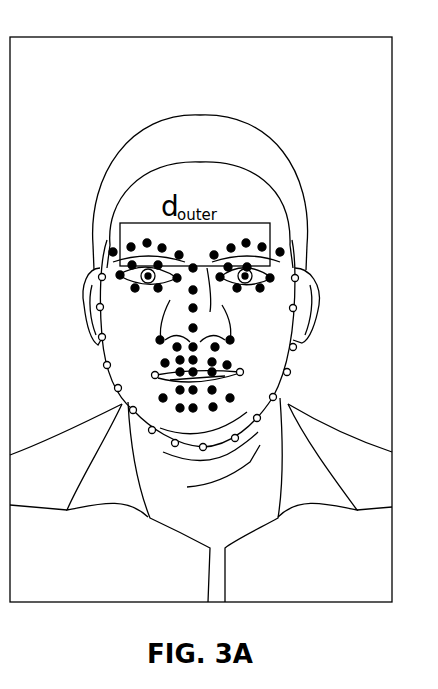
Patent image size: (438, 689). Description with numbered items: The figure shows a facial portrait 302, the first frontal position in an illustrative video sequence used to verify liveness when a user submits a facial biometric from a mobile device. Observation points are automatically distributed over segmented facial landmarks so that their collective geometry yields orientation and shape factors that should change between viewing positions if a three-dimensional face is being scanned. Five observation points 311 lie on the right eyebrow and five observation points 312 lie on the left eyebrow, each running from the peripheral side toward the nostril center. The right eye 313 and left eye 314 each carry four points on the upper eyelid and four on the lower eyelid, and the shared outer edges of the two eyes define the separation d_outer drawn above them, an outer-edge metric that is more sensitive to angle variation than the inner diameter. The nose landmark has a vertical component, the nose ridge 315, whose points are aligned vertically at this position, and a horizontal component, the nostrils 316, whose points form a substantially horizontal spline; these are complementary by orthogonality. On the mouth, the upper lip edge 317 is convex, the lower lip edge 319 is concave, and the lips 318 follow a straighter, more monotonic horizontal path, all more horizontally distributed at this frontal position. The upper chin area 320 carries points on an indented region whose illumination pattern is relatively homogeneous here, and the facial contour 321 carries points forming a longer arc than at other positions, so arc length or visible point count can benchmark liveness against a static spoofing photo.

The facial portrait 302 is at (325, 37).
The observation points on the right eyebrow 311 is at (138, 238).
The observation points on the left eyebrow 312 is at (258, 237).
The right eye observation points 313 is at (111, 272).
The left eye observation points 314 is at (272, 271).
The nose ridge 315 is at (203, 306).
The nostrils 316 is at (224, 348).
The upper lip edge 317 is at (237, 362).
The lips 318 is at (224, 375).
The lower lip edge 319 is at (219, 390).
The upper chin area 320 is at (221, 407).
The facial contour 321 is at (108, 382).